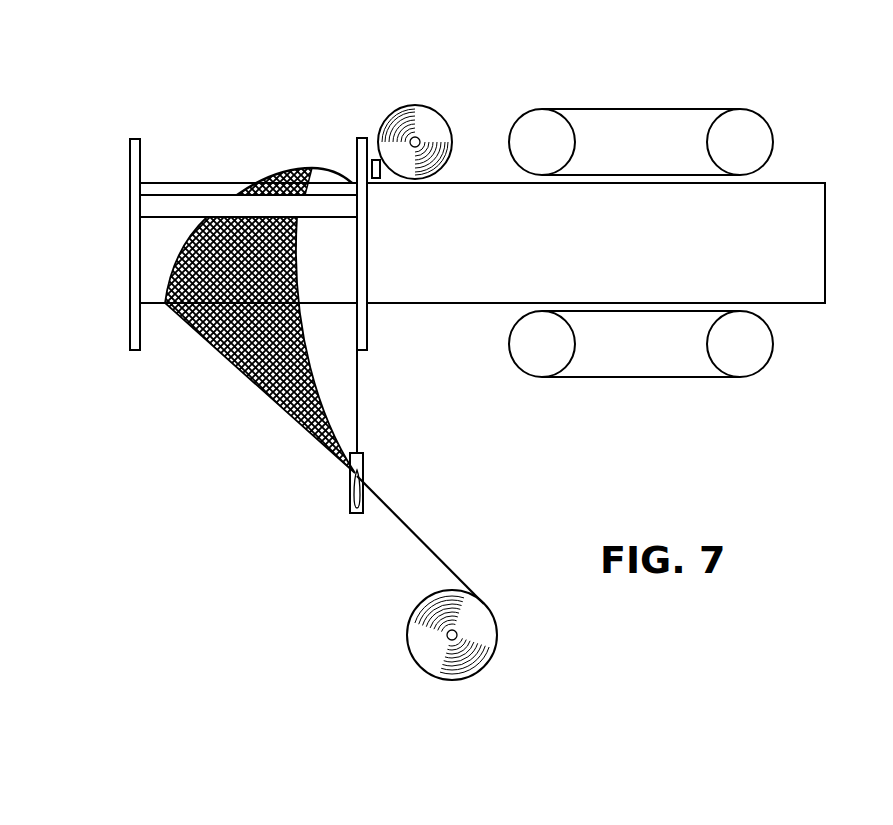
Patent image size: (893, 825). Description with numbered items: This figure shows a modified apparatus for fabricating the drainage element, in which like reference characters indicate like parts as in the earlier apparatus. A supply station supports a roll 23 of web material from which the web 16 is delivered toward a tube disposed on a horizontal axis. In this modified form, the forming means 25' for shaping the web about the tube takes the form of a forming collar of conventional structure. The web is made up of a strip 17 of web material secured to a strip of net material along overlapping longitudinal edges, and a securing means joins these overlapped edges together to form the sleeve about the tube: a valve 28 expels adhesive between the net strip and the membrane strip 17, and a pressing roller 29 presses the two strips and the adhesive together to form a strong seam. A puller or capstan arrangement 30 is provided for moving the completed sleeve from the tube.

The forming means 25' is at (205, 325).
The strip of web material 17 is at (432, 293).
The puller or capstan arrangement 30 is at (646, 100).
The pressing roller 29 is at (408, 117).
The valve 28 is at (374, 160).
The web 16 is at (420, 538).
The roll 23 is at (497, 629).